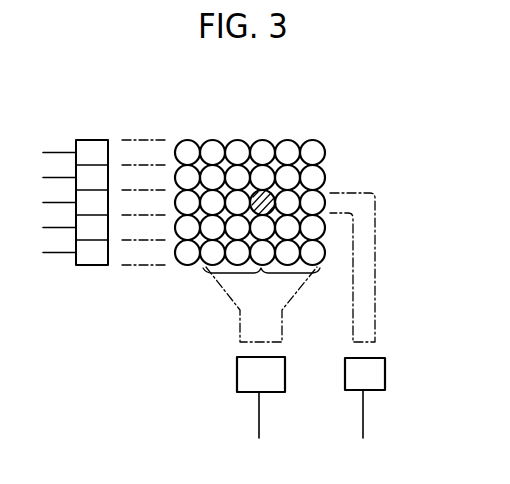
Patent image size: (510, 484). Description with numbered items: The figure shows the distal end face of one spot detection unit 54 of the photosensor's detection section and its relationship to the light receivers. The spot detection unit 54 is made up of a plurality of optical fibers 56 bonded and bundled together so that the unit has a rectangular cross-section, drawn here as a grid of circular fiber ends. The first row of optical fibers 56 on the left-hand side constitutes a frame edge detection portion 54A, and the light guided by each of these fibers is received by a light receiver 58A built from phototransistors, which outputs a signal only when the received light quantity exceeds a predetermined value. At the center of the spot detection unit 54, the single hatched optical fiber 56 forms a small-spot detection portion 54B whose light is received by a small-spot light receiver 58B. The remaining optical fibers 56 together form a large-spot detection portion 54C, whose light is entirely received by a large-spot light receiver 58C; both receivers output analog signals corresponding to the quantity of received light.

The spot detection unit 54 is at (267, 201).
The frame edge detection portion 54A is at (188, 270).
The small-spot detection portion 54B is at (268, 213).
The large-spot detection portion 54C is at (262, 275).
The optical fiber 56 is at (186, 140).
The light receiver 58A is at (98, 149).
The small-spot light receiver 58B is at (386, 377).
The large-spot light receiver 58C is at (237, 372).